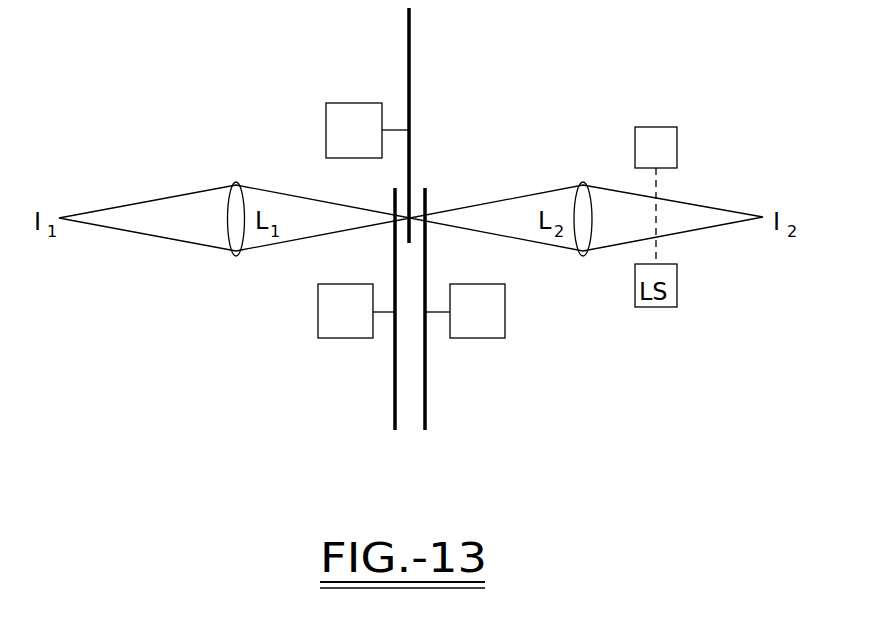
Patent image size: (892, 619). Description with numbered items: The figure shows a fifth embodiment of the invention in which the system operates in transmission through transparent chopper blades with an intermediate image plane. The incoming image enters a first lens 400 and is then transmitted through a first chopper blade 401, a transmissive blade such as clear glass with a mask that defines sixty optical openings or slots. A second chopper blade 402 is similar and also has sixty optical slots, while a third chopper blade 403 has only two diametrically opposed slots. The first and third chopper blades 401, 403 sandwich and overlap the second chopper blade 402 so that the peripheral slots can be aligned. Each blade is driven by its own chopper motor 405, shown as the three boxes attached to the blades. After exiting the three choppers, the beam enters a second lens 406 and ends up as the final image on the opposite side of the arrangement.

The first lens 400 is at (236, 182).
The first chopper blade 401 is at (395, 408).
The second chopper blade 402 is at (406, 42).
The third chopper blade 403 is at (425, 408).
The chopper motors 405 is at (350, 103).
The second lens 406 is at (583, 182).